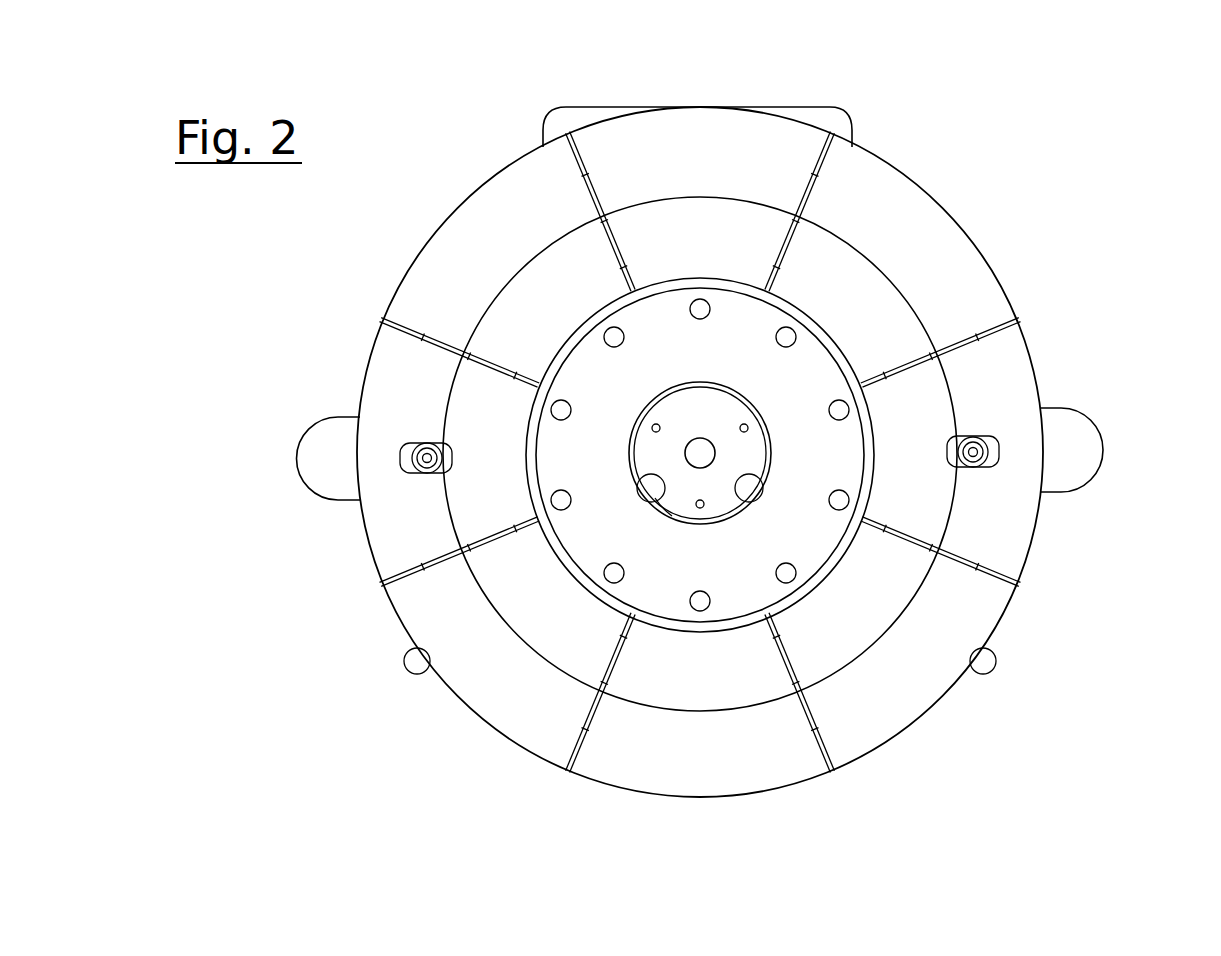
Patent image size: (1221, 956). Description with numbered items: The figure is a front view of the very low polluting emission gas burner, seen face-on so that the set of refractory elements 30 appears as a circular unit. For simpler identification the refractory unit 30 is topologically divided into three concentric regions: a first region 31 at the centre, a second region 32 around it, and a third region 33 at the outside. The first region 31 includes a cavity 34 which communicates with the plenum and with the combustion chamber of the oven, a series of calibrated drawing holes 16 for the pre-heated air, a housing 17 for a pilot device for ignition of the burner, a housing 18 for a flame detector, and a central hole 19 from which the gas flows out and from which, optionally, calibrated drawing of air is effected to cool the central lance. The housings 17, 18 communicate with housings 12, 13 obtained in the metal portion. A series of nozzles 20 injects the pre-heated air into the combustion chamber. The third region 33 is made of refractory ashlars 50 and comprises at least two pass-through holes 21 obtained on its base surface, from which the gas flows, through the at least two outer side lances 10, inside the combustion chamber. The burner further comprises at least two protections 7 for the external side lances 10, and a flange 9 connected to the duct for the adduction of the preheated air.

The protection 7 is at (320, 464).
The flange 9 is at (833, 125).
The outer side lance 10 is at (415, 445).
The housing in the metal portion 12 is at (408, 668).
The housing in the metal portion 13 is at (995, 668).
The calibrated drawing holes 16 is at (742, 425).
The housing for pilot device 17 is at (655, 490).
The housing for flame detector 18 is at (748, 488).
The central hole 19 is at (700, 453).
The nozzles 20 is at (561, 410).
The pass-through holes 21 is at (407, 447).
The set of refractory elements 30 is at (436, 724).
The first region 31 is at (660, 452).
The second region 32 is at (813, 543).
The third region 33 is at (910, 705).
The cavity 34 is at (677, 503).
The refractory ashlars 50 is at (750, 225).